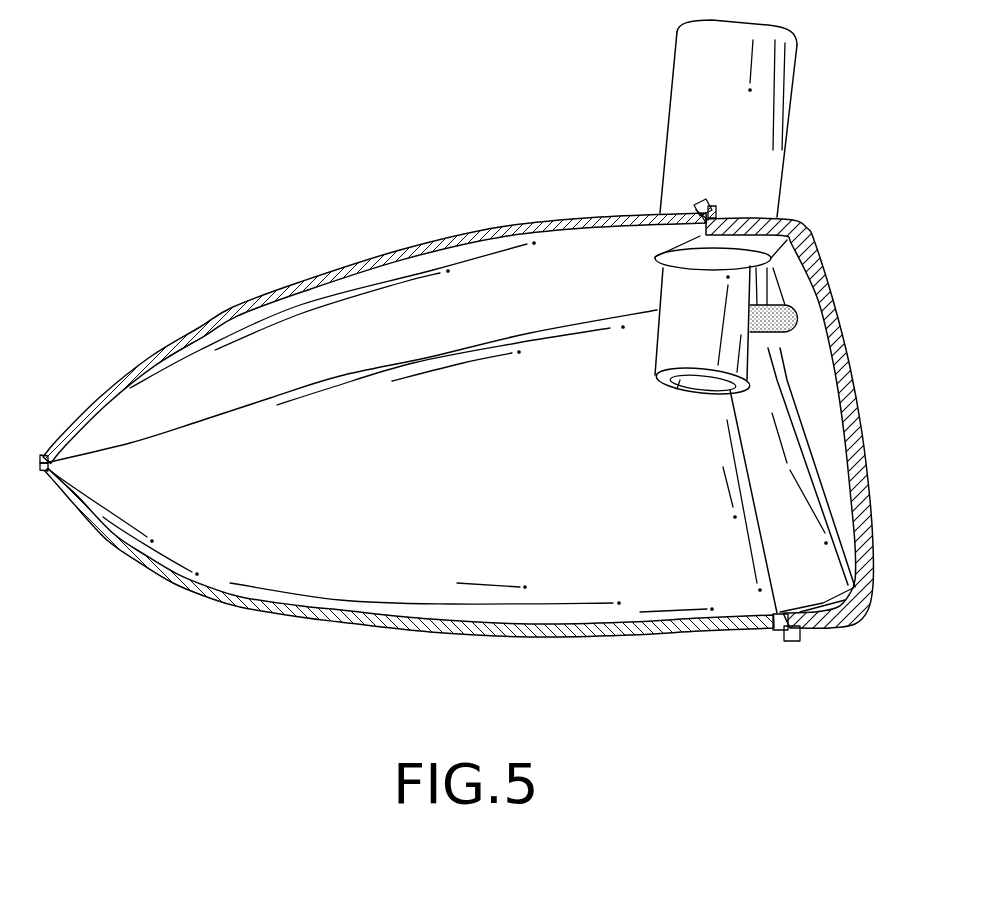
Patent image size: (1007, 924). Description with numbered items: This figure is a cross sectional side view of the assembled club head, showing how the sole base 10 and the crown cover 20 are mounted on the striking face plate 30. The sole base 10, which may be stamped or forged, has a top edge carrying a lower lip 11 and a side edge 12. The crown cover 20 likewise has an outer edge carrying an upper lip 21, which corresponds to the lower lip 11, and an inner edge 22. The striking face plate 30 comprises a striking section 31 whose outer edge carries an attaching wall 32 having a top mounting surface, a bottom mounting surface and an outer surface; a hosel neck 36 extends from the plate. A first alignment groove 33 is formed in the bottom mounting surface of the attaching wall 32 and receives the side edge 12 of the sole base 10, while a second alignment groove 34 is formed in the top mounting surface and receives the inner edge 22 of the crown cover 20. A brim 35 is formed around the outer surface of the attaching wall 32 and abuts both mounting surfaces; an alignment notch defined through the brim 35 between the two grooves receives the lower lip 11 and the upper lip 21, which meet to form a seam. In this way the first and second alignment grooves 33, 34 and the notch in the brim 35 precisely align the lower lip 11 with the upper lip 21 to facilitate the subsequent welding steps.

The sole base 10 is at (450, 625).
The lower lip 11 is at (44, 471).
The side edge 12 is at (773, 627).
The crown cover 20 is at (398, 257).
The upper lip 21 is at (43, 456).
The inner edge 22 is at (703, 217).
The striking face plate 30 is at (845, 262).
The striking section 31 is at (843, 382).
The attaching wall 32 is at (837, 617).
The first alignment groove 33 is at (800, 620).
The second alignment groove 34 is at (713, 210).
The brim 35 is at (702, 205).
The hosel neck 36 is at (747, 117).